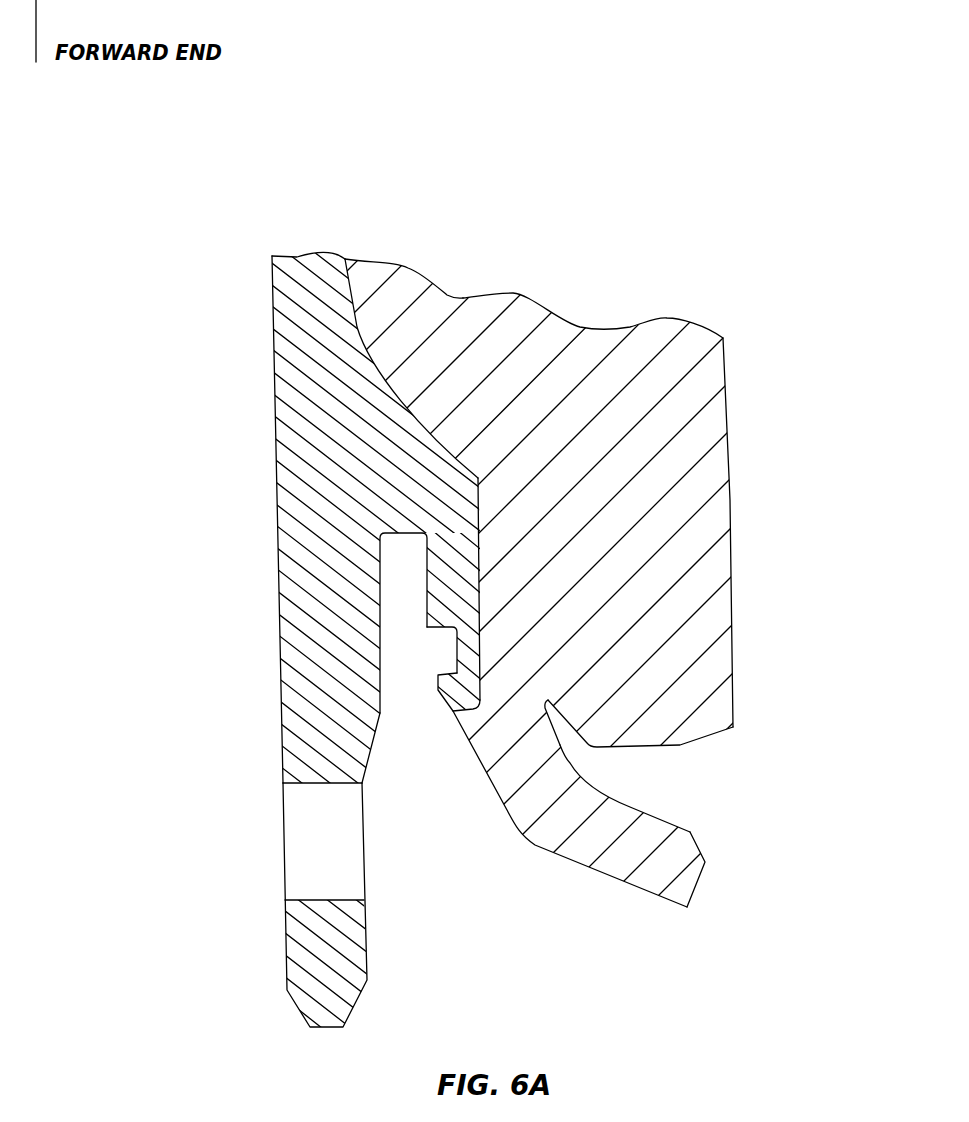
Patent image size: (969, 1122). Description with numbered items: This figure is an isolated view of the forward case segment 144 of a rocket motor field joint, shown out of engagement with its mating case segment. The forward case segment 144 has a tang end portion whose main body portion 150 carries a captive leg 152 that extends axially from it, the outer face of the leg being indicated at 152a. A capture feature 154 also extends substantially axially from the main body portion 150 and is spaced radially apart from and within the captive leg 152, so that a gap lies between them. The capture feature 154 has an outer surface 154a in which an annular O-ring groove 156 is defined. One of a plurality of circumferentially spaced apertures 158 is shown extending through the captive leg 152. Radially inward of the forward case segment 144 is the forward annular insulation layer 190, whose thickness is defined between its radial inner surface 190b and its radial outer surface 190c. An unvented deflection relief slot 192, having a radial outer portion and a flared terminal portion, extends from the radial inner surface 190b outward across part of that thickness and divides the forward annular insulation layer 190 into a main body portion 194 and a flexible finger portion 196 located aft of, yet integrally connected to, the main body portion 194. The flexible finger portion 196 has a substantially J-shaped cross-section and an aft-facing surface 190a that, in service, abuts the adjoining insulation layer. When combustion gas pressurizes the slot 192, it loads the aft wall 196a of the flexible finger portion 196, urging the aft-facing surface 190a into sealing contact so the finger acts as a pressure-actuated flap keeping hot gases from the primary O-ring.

The forward case segment 144 is at (307, 292).
The main body portion 150 is at (343, 408).
The captive leg 152 is at (300, 698).
The outer surface of shank 152a is at (275, 560).
The capture feature 154 is at (448, 597).
The outer surface 154a is at (428, 572).
The annular O-ring groove 156 is at (448, 652).
The aperture 158 is at (318, 850).
The forward annular insulation layer 190 is at (548, 388).
The aft-facing surface 190a is at (633, 883).
The radial inner surface 190b is at (735, 500).
The radial outer surface 190c is at (353, 326).
The unvented deflection relief slot 192 is at (622, 765).
The main body portion 194 is at (645, 652).
The flexible finger portion 196 is at (640, 860).
The aft wall 196a is at (657, 808).